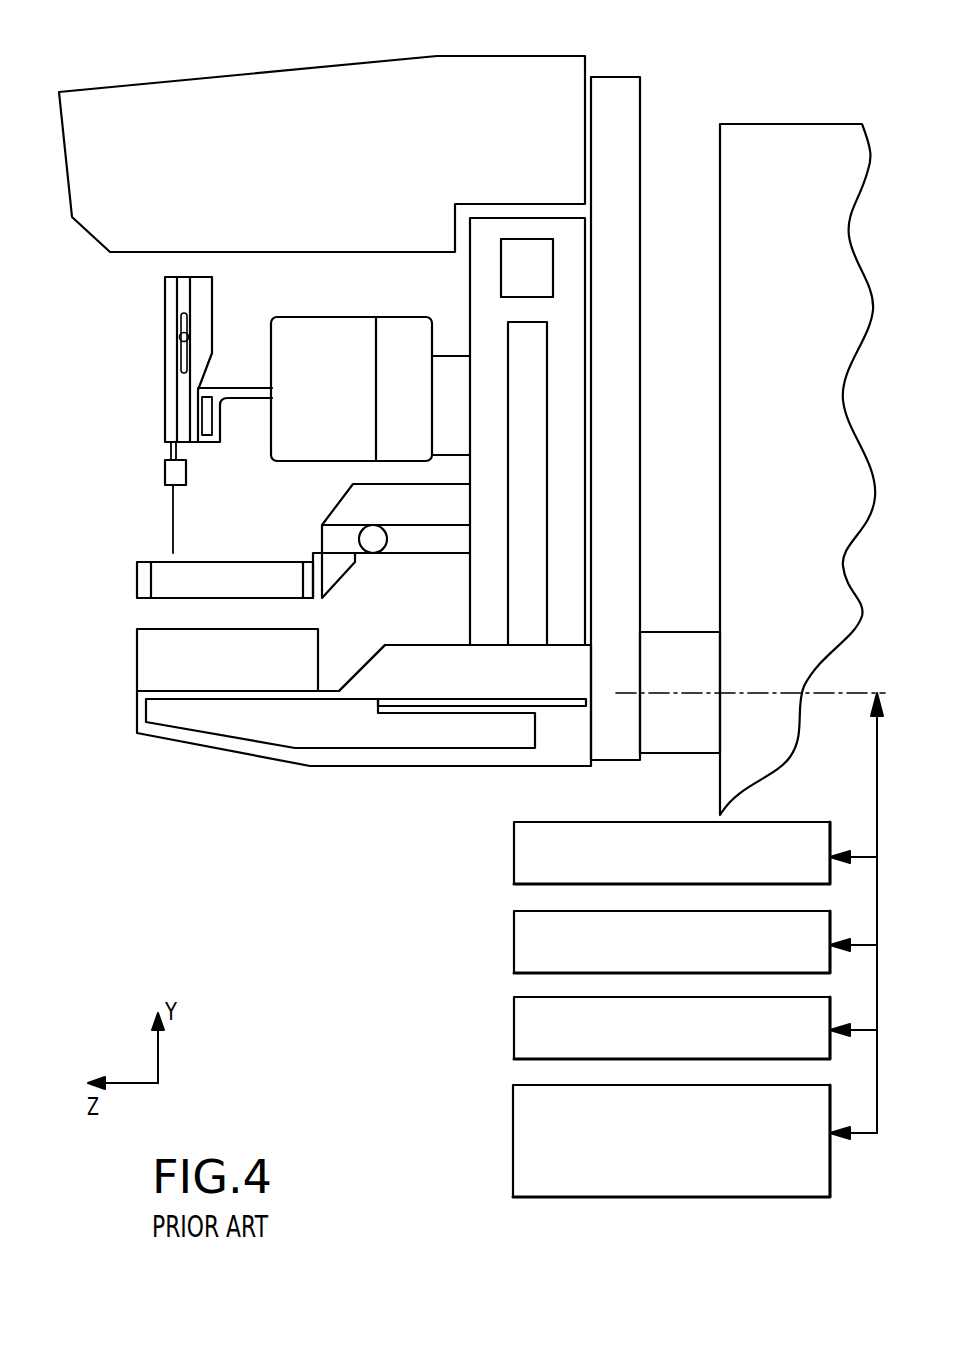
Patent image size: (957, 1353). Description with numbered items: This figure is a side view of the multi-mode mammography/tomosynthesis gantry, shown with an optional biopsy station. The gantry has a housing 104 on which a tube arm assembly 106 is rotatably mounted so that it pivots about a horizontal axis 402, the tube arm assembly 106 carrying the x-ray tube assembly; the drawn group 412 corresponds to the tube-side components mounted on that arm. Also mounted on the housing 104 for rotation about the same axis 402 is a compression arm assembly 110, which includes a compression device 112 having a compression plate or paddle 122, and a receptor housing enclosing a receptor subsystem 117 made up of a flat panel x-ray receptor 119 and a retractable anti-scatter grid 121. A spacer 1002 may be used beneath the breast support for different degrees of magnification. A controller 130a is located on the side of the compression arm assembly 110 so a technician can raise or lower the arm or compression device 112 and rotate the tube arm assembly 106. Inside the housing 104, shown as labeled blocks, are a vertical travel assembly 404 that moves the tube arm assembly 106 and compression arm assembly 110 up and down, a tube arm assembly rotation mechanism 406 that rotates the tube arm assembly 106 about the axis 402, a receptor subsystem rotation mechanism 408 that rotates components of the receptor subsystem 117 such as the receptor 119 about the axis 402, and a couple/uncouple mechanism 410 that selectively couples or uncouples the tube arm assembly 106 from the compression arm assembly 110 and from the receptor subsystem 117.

The housing 104 is at (806, 137).
The tube arm assembly 106 is at (631, 101).
The compression arm assembly 110 is at (570, 242).
The controller 130a is at (547, 277).
The compression device 112 is at (282, 518).
The x-ray source and collimator 412 is at (130, 282).
The compression plate or paddle 122 is at (143, 578).
The spacer 1002 is at (126, 670).
The receptor subsystem 117 is at (124, 760).
The flat panel x-ray receptor 119 is at (338, 713).
The retractable anti-scatter grid 121 is at (425, 702).
The horizontal axis 402 is at (770, 692).
The vertical travel assembly 404 is at (514, 845).
The tube arm assembly rotation mechanism 406 is at (516, 927).
The receptor subsystem rotation mechanism 408 is at (516, 1027).
The couple/uncouple mechanism 410 is at (520, 1132).